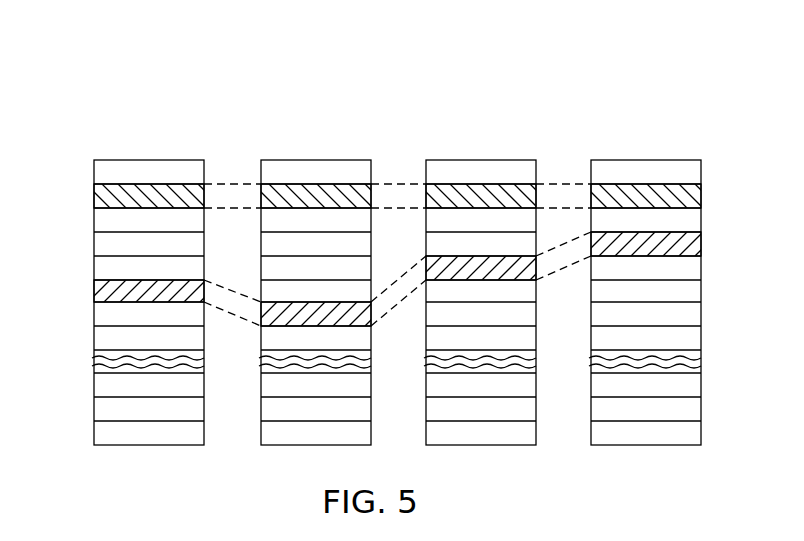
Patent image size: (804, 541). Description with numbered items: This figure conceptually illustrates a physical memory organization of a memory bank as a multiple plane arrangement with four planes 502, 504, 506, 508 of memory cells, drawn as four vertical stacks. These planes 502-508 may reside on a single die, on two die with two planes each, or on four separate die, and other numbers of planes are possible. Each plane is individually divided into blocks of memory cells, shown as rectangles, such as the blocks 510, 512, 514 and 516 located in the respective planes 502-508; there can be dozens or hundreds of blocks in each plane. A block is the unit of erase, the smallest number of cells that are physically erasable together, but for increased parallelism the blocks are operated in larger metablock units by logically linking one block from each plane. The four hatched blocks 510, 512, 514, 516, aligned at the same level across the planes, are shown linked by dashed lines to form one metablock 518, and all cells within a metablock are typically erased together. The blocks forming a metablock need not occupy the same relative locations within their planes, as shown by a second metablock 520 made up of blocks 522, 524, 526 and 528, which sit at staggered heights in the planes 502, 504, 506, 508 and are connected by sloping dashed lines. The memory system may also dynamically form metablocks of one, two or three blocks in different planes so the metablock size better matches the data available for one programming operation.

The plane 502 is at (147, 155).
The plane 504 is at (317, 155).
The plane 506 is at (482, 155).
The plane 508 is at (632, 68).
The block 510 is at (120, 192).
The block 512 is at (297, 195).
The block 514 is at (463, 190).
The block 516 is at (672, 194).
The metablock 518 is at (567, 192).
The second metablock 520 is at (565, 245).
The block 522 is at (112, 293).
The block 524 is at (295, 312).
The block 526 is at (468, 265).
The block 528 is at (677, 242).